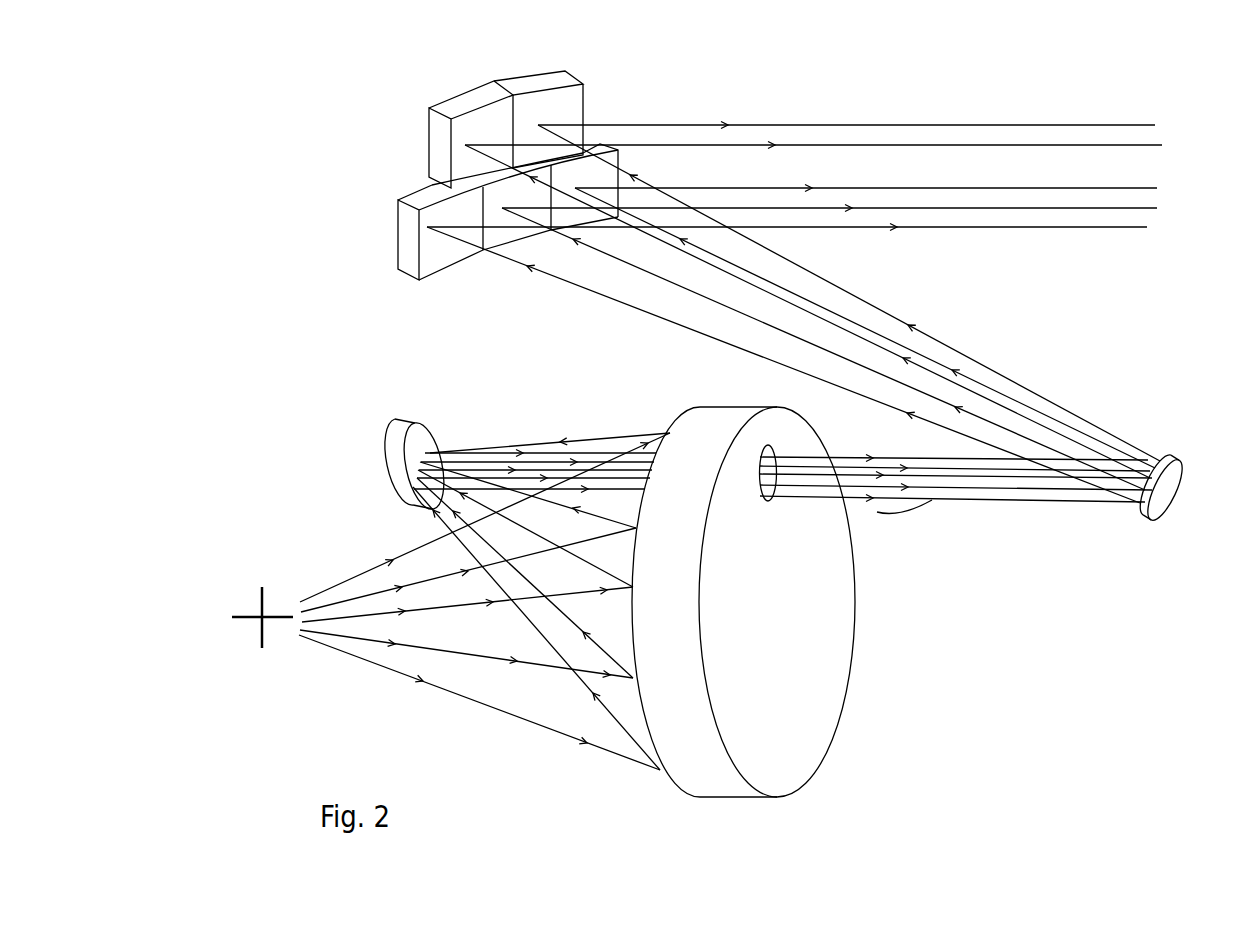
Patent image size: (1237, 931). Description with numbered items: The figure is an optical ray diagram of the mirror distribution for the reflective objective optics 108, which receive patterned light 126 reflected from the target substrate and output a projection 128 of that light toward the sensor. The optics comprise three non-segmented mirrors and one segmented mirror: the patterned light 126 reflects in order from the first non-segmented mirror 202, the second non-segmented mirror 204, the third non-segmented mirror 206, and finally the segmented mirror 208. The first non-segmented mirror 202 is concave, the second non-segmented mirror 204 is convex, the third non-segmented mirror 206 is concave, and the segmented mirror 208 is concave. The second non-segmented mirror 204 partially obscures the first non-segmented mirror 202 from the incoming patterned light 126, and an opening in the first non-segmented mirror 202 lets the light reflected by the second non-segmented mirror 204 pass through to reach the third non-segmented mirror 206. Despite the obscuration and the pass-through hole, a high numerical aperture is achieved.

The reflective objective optics 108 is at (338, 96).
The patterned light 126 is at (469, 712).
The projection of the patterned light 128 is at (1019, 118).
The first non-segmented mirror 202 is at (801, 626).
The second non-segmented mirror 204 is at (385, 450).
The third non-segmented mirror 206 is at (1172, 493).
The segmented mirror 208 is at (480, 92).